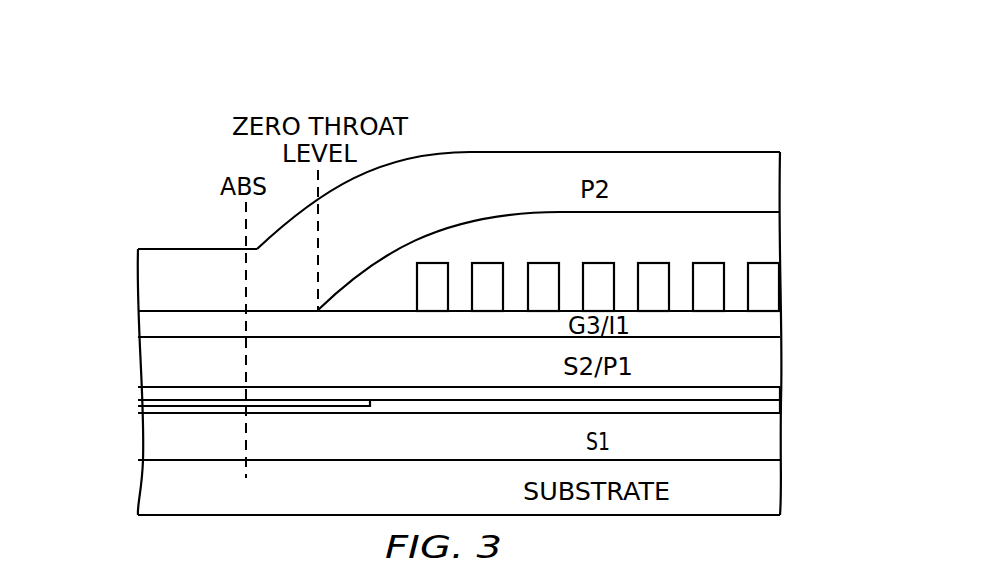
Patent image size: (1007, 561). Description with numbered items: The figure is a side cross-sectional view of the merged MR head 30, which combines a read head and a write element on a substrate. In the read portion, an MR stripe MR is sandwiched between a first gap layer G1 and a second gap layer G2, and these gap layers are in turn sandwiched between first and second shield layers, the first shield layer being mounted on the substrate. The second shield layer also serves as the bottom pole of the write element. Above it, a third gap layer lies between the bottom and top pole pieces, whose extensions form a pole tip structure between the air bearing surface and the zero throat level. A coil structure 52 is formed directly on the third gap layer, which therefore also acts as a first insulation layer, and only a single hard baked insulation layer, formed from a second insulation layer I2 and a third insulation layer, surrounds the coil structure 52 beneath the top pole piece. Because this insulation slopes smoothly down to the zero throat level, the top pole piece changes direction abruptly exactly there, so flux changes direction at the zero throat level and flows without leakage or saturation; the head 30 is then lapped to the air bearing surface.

The merged MR head 30 is at (560, 93).
The coil structure 52 is at (605, 263).
The MR stripe MR is at (150, 400).
The first gap layer G1 is at (783, 407).
The second gap layer G2 is at (783, 389).
The second insulation layer I2 is at (752, 247).